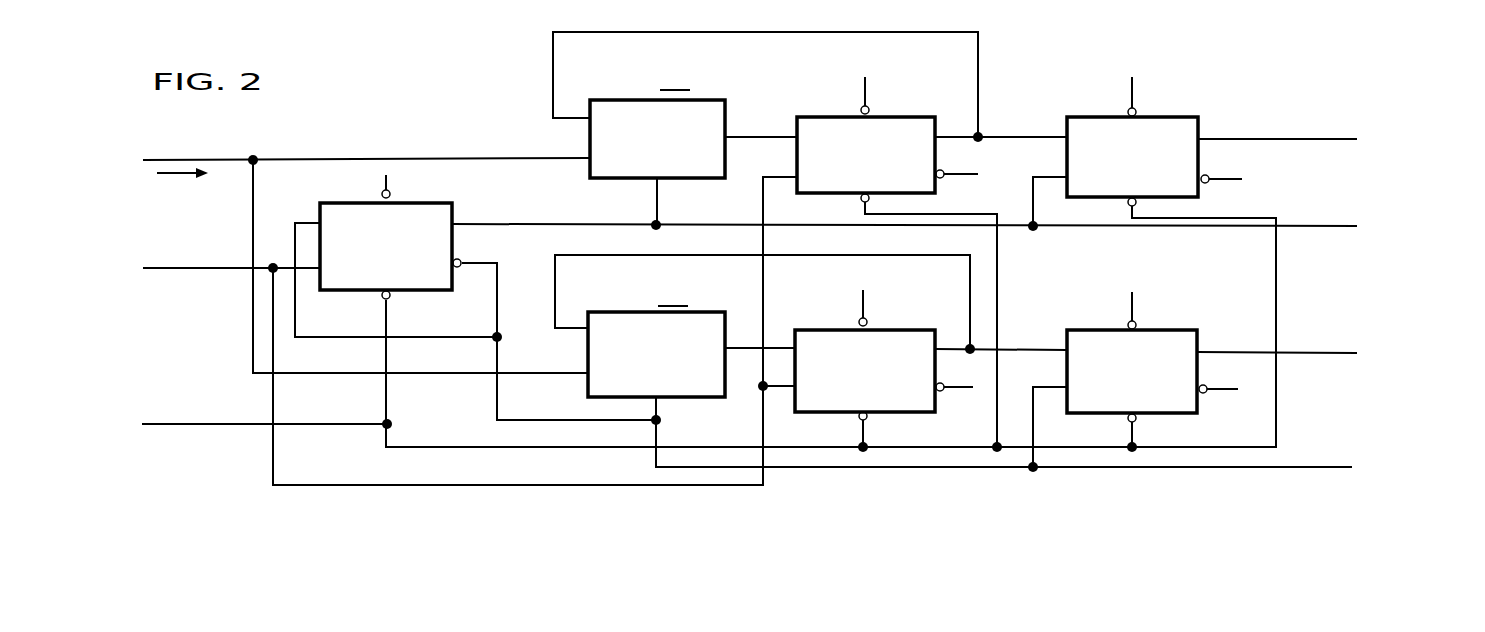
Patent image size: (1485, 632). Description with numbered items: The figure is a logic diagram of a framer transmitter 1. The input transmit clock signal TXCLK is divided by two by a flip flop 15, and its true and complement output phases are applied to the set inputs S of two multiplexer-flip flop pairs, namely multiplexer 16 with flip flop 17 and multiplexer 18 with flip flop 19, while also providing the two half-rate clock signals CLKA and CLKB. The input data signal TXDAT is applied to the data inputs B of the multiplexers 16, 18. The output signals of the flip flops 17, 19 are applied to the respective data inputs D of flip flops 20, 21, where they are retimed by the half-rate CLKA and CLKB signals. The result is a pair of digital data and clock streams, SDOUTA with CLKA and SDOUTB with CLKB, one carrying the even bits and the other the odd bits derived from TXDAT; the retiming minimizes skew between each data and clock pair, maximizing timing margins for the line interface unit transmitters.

The framer transmitter 1 is at (506, 95).
The flip flop 15 is at (442, 202).
The multiplexer 16 is at (618, 182).
The flip flop 17 is at (833, 110).
The multiplexer 18 is at (585, 342).
The flip flop 19 is at (913, 328).
The flip flop 20 is at (1100, 115).
The flip flop 21 is at (1105, 328).